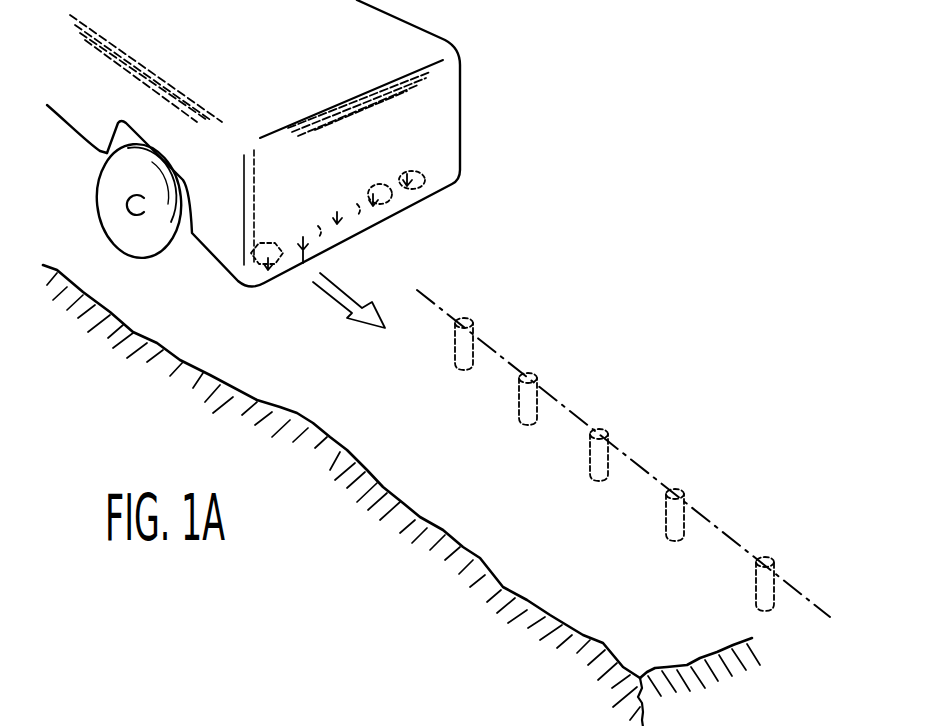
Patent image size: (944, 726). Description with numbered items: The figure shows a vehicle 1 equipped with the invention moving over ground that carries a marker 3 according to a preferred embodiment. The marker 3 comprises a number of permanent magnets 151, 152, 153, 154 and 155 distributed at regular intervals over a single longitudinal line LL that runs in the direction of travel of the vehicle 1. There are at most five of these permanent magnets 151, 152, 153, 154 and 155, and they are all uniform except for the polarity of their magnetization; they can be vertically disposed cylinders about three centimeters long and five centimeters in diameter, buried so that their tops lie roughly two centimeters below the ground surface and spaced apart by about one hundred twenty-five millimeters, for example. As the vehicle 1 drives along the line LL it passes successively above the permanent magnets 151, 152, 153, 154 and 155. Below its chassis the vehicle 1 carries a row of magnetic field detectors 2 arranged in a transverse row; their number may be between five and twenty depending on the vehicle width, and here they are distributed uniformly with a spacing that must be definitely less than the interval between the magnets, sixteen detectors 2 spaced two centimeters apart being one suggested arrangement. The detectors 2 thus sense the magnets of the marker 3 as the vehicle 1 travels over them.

The vehicle 1 is at (457, 75).
The magnetic field detectors 2 is at (270, 272).
The marker 3 is at (583, 505).
The longitudinal line LL is at (428, 296).
The permanent magnet 151 is at (467, 320).
The permanent magnet 152 is at (530, 375).
The permanent magnet 153 is at (603, 432).
The permanent magnet 154 is at (678, 492).
The permanent magnet 155 is at (800, 541).